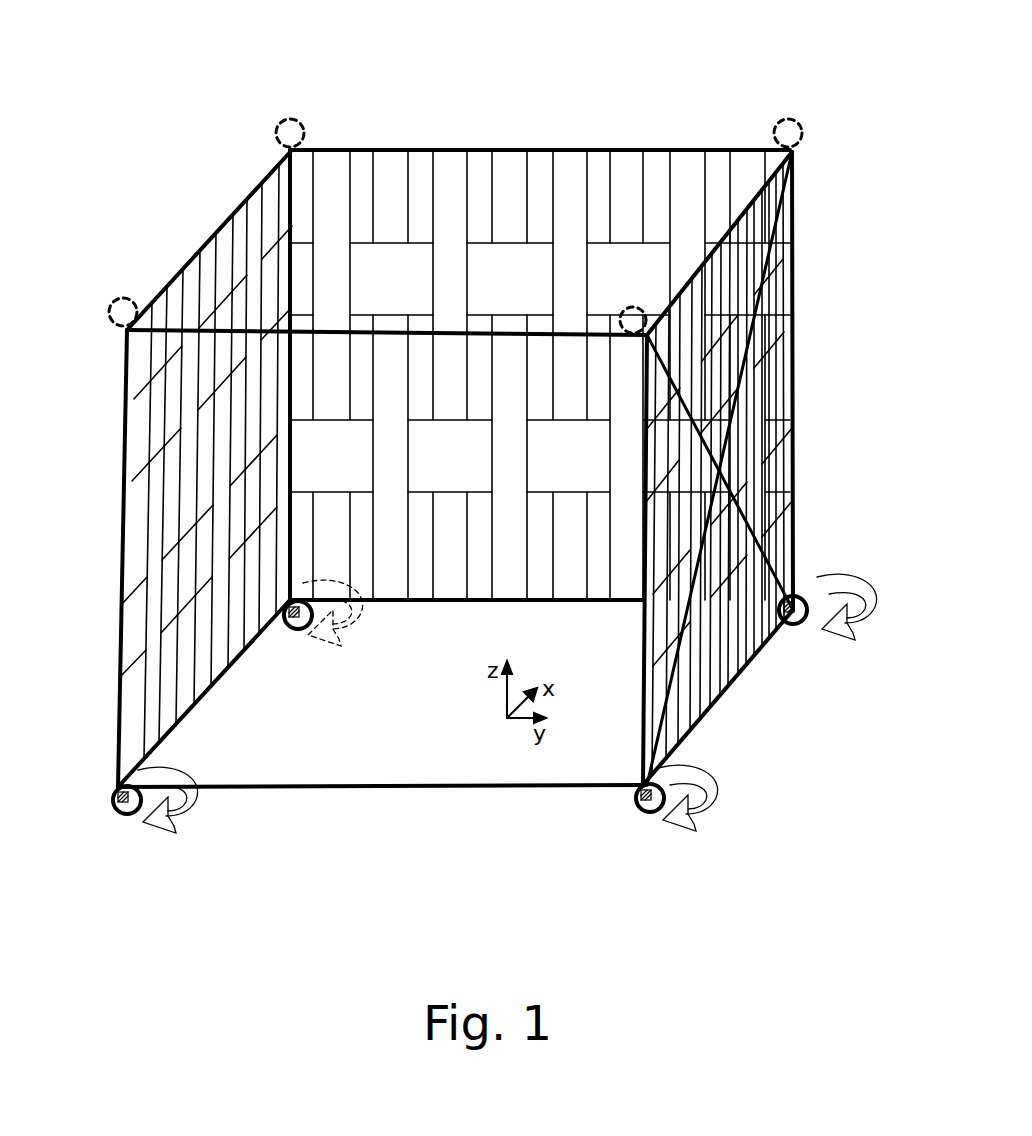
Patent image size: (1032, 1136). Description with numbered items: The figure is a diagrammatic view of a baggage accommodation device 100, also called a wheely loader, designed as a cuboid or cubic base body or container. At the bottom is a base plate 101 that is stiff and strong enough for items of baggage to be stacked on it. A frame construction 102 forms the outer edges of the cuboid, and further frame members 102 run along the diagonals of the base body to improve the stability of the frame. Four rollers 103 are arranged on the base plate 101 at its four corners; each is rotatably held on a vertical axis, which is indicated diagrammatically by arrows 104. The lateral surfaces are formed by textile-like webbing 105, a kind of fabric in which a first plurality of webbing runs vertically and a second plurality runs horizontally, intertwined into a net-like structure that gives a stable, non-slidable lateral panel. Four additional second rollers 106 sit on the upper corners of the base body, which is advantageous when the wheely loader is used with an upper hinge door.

The baggage accommodation device 100 is at (356, 885).
The base plate 101 is at (410, 748).
The frame construction 102 is at (398, 130).
The rollers 103 is at (675, 775).
The arrows 104 is at (172, 838).
The textile-like webbing 105 is at (445, 178).
The second rollers 106 is at (262, 122).